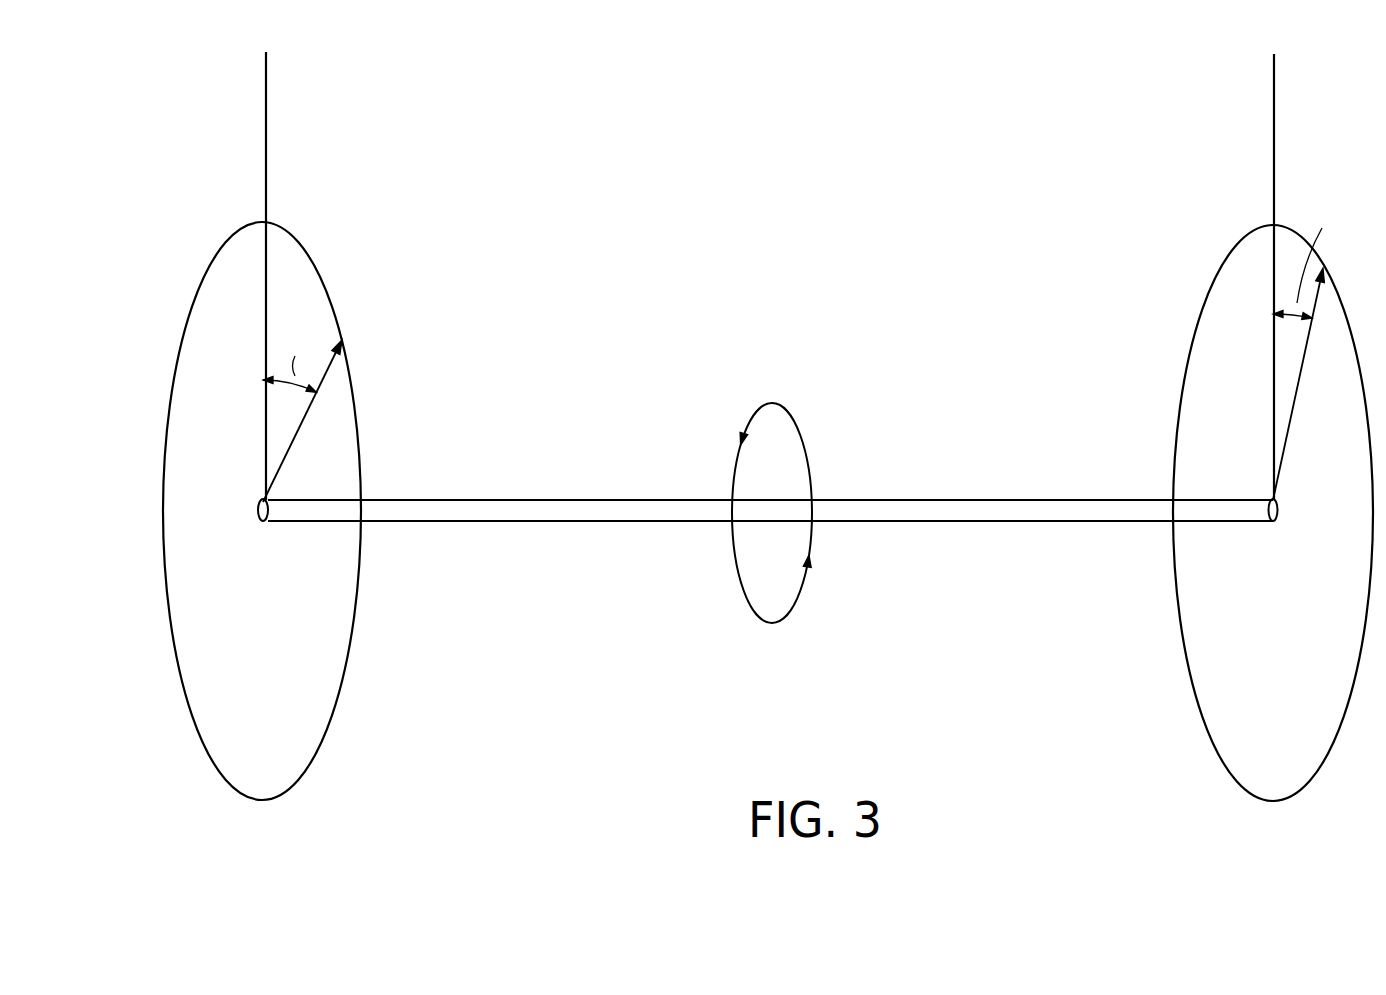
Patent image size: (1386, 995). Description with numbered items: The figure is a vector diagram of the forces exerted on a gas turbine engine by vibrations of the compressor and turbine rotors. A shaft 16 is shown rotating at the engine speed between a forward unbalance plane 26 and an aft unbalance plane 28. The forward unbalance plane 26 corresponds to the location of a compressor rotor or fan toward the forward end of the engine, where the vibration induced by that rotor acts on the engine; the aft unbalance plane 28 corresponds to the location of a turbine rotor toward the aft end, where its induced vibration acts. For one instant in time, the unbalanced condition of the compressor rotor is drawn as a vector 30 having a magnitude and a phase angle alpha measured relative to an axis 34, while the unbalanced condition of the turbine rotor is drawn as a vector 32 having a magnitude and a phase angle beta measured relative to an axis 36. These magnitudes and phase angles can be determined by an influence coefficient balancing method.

The shaft 16 is at (540, 523).
The forward unbalance plane 26 is at (257, 800).
The aft unbalance plane 28 is at (1233, 780).
The vector 30 is at (349, 381).
The vector 32 is at (1331, 298).
The axis 34 is at (266, 96).
The axis 36 is at (1274, 97).